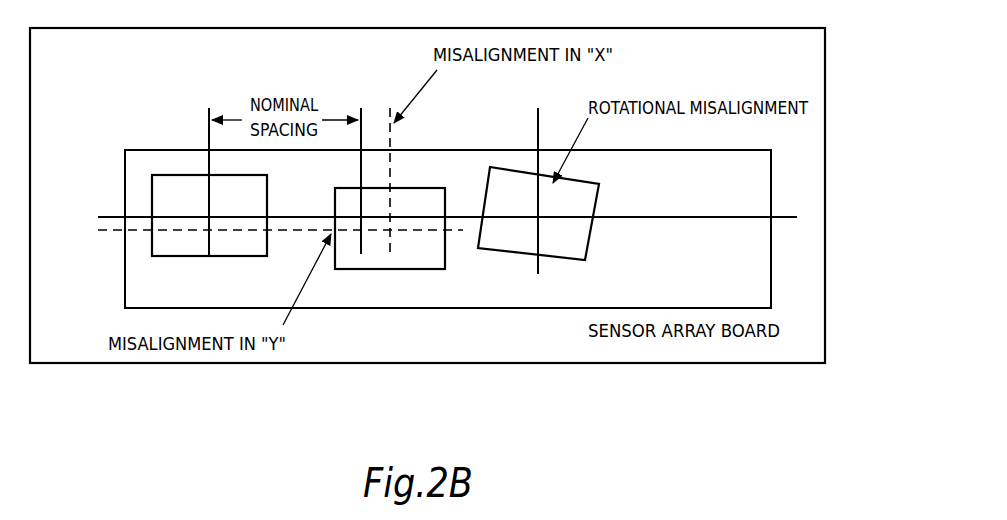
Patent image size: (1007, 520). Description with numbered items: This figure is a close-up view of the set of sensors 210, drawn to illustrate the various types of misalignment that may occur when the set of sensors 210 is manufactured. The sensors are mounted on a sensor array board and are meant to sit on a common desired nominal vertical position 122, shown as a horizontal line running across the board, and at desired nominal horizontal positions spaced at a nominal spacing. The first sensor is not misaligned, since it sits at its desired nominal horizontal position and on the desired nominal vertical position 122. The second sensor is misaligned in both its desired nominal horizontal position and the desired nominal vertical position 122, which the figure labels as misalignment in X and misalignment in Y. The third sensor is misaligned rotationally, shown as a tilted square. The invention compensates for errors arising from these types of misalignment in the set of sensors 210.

The desired nominal vertical position 122 is at (787, 214).
The set of sensors 210 is at (125, 277).